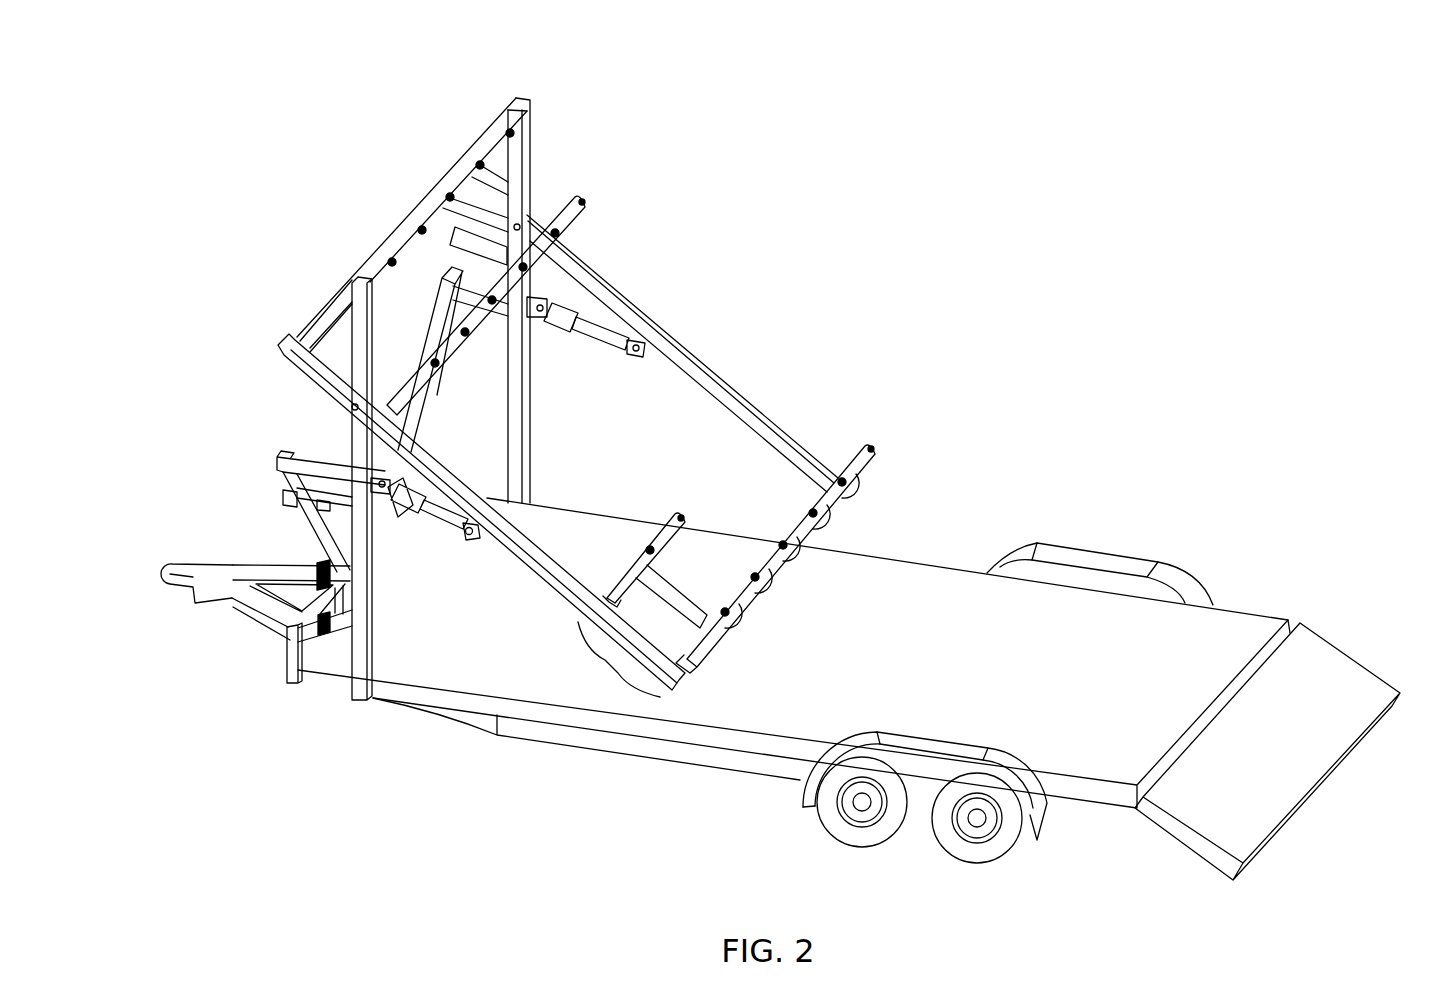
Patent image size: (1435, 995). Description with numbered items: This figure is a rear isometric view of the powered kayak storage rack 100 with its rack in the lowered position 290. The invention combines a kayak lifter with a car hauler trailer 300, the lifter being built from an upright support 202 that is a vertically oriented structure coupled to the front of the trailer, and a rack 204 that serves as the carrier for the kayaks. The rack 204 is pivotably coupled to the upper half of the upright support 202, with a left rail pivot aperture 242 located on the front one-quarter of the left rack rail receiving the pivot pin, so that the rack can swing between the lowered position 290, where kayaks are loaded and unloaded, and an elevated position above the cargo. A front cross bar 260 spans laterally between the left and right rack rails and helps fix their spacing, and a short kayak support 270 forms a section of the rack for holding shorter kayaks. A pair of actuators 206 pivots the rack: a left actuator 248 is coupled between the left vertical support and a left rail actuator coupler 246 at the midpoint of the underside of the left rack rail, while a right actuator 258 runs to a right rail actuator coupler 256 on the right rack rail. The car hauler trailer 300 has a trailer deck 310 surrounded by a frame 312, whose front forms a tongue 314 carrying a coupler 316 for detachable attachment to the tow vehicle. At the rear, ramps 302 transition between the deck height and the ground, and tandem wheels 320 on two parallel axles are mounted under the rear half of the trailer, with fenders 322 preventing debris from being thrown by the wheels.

The powered kayak storage rack 100 is at (237, 237).
The upright support 202 is at (542, 92).
The rack 204 is at (560, 83).
The pair of actuators 206 is at (607, 333).
The left rail pivot aperture 242 is at (350, 407).
The left rail actuator coupler 246 is at (468, 537).
The left actuator 248 is at (440, 512).
The right rail actuator coupler 256 is at (650, 335).
The right actuator 258 is at (583, 327).
The front cross bar 260 is at (323, 320).
The short kayak support 270 is at (613, 672).
The lowered position 290 is at (975, 449).
The car hauler trailer 300 is at (1210, 640).
The ramps 302 is at (1307, 753).
The trailer deck 310 is at (902, 583).
The frame 312 is at (715, 762).
The tongue 314 is at (257, 612).
The coupler 316 is at (167, 583).
The tandem wheels 320 is at (893, 827).
The fenders 322 is at (1132, 562).